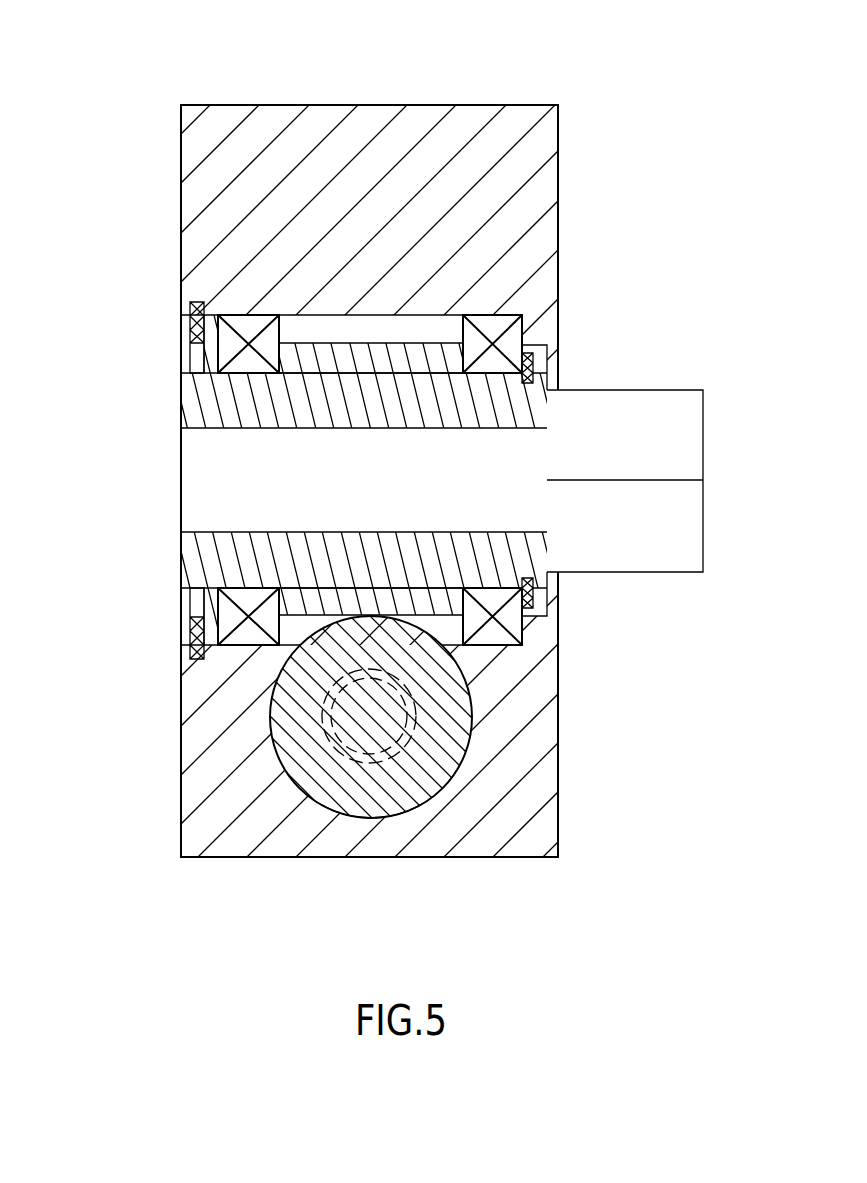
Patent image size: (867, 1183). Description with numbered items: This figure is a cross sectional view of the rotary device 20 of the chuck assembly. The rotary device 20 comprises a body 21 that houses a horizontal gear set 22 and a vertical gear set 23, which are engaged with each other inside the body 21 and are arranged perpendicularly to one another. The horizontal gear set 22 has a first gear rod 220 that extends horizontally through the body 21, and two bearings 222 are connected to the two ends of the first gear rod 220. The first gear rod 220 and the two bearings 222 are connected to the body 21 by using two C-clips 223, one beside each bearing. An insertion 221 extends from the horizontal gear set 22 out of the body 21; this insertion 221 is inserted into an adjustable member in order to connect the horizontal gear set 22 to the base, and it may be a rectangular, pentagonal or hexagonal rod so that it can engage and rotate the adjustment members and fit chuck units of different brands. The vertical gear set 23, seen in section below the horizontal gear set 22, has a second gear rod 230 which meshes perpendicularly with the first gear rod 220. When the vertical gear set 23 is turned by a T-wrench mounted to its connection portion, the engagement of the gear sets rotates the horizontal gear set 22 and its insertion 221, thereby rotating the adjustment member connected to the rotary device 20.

The rotary device 20 is at (165, 140).
The body 21 is at (288, 105).
The horizontal gear set 22 is at (160, 410).
The first gear rod 220 is at (394, 345).
The insertion 221 is at (605, 390).
The bearings 222 is at (488, 313).
The C-clips 223 is at (533, 357).
The vertical gear set 23 is at (495, 712).
The second gear rod 230 is at (362, 818).